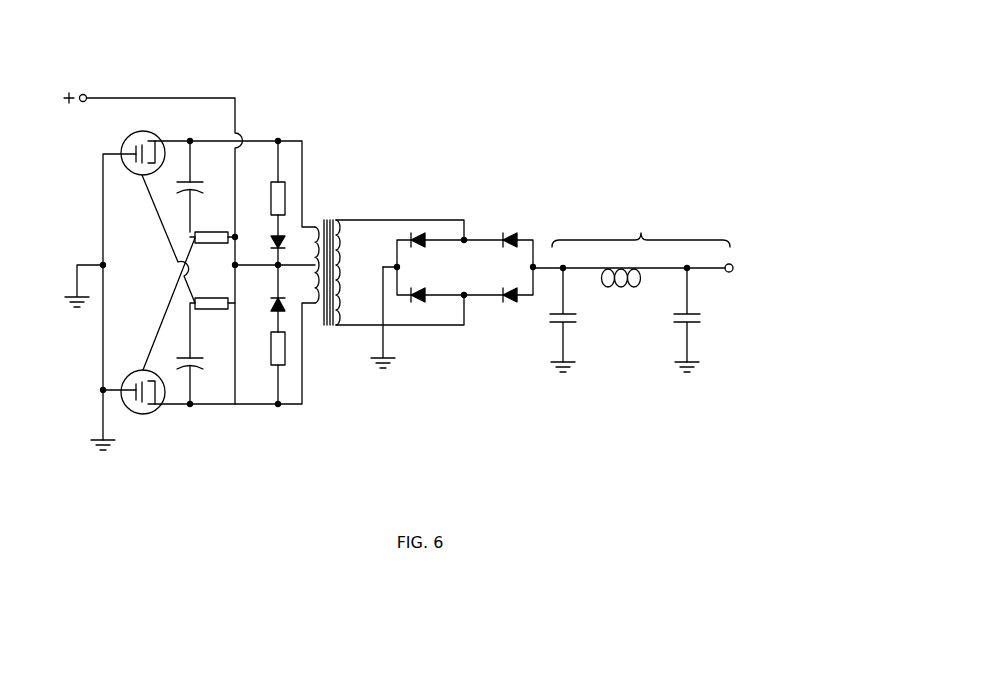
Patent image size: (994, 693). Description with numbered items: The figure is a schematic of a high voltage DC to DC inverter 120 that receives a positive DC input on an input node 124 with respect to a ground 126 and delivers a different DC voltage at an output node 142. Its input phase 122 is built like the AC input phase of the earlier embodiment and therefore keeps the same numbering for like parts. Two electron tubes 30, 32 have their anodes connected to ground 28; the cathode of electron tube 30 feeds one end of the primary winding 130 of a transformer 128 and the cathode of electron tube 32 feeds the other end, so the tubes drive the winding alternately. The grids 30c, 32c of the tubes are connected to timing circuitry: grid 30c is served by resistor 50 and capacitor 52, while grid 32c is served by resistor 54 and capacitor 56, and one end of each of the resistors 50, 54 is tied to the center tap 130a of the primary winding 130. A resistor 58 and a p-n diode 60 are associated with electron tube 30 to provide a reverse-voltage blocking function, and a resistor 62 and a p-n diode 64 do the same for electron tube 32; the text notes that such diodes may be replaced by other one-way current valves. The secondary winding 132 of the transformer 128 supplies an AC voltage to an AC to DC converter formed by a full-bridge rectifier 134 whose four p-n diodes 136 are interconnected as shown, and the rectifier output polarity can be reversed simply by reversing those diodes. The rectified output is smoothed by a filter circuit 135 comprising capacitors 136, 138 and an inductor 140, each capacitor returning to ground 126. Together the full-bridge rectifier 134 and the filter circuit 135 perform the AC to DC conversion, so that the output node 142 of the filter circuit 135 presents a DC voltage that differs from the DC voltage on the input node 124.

The DC to DC inverter 120 is at (279, 74).
The input phase 122 is at (369, 137).
The input node 124 is at (85, 93).
The ground 126 is at (103, 433).
The transformer 128 is at (330, 214).
The primary winding 130 is at (381, 236).
The center tap 130a is at (306, 272).
The secondary winding 132 is at (343, 233).
The full-bridge rectifier 134 is at (479, 254).
The filter circuit 135 is at (651, 283).
The p-n diodes 136 is at (513, 218).
The capacitor 138 is at (700, 320).
The inductor 140 is at (640, 288).
The output node 142 is at (734, 268).
The ground 28 is at (90, 260).
The electron tube 30 is at (150, 131).
The grid 30c is at (158, 214).
The electron tube 32 is at (152, 414).
The grid 32c is at (168, 300).
The resistor 50 is at (230, 306).
The capacitor 52 is at (200, 361).
The resistor 54 is at (215, 232).
The capacitor 56 is at (200, 186).
The resistor 58 is at (271, 197).
The p-n diode 60 is at (271, 240).
The resistor 62 is at (271, 350).
The p-n diode 64 is at (271, 303).